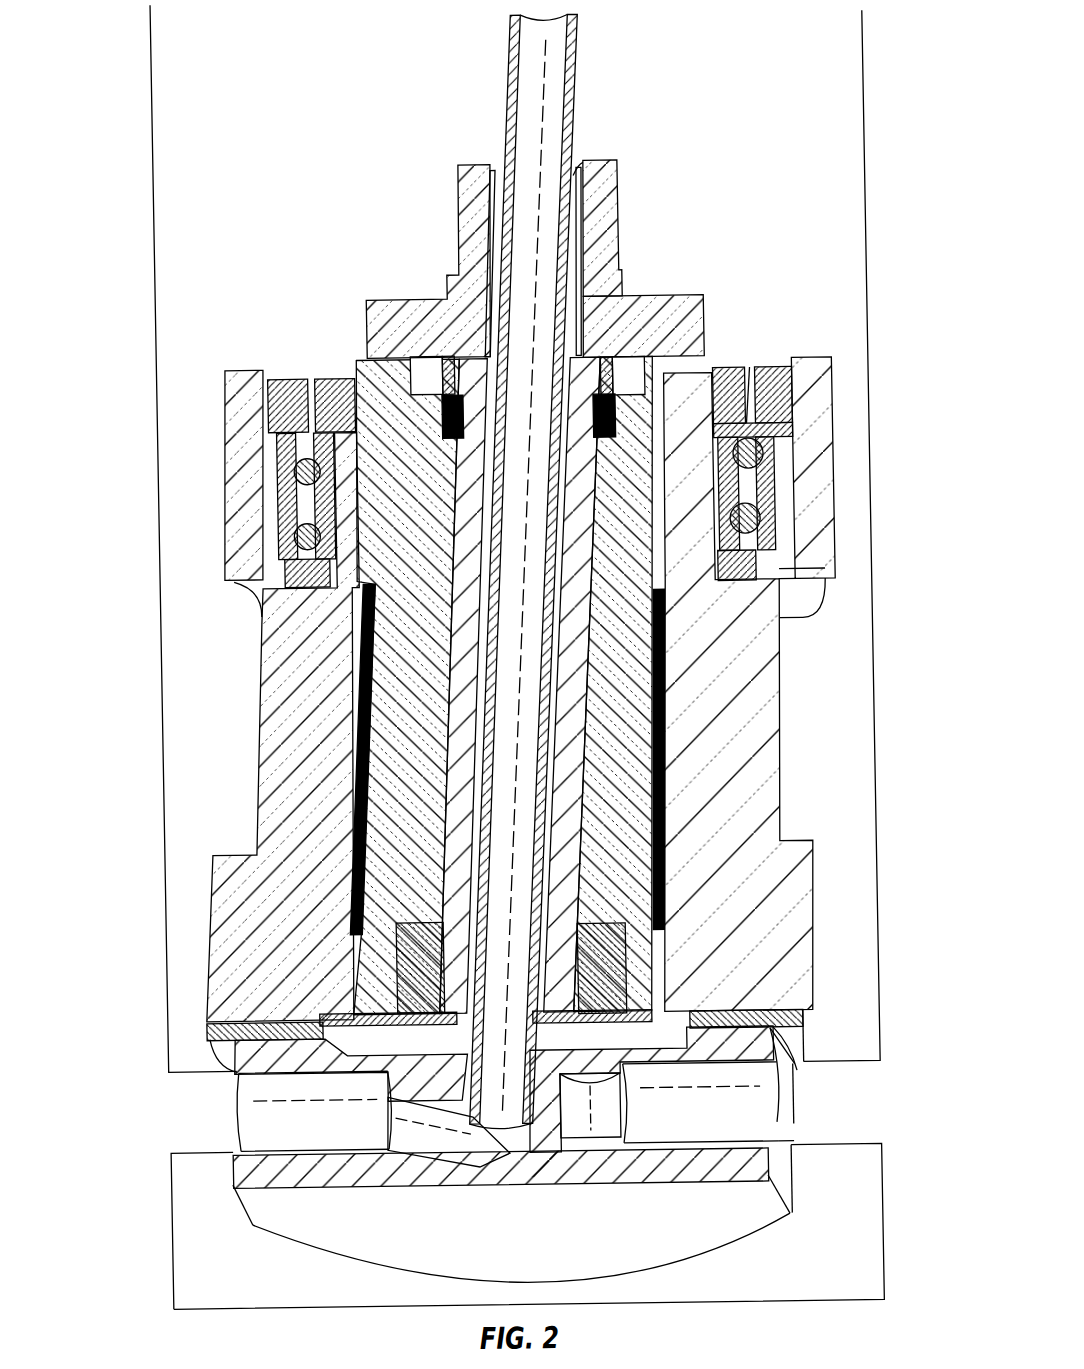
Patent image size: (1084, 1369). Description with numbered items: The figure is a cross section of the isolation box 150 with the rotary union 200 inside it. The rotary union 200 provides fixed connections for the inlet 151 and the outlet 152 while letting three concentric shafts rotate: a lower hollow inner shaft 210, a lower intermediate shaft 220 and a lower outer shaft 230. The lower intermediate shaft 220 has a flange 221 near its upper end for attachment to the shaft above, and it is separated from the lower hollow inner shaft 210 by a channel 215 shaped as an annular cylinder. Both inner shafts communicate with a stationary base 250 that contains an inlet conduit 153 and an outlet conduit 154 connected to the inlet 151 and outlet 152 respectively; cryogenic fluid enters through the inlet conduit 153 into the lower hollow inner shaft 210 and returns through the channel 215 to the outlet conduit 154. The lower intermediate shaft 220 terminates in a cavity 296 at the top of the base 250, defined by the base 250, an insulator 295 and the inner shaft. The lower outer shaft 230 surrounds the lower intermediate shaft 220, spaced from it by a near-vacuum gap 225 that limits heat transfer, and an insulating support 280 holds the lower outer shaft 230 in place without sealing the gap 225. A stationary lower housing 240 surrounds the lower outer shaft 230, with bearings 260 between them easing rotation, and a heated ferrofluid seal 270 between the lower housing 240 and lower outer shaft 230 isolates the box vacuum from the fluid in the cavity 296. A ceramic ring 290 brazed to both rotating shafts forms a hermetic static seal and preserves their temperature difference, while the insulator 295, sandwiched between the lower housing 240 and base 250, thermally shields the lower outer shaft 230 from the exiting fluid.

The isolation box 150 is at (175, 278).
The inlet 151 is at (210, 1118).
The outlet 152 is at (828, 1104).
The inlet conduit 153 is at (294, 1124).
The outlet conduit 154 is at (743, 1103).
The rotary union 200 is at (730, 116).
The lower hollow inner shaft 210 is at (516, 118).
The channel 215 is at (506, 212).
The lower intermediate shaft 220 is at (468, 254).
The flange 221 is at (690, 307).
The gap 225 is at (446, 538).
The lower outer shaft 230 is at (402, 746).
The lower housing 240 is at (760, 703).
The base 250 is at (735, 1233).
The bearings 260 is at (750, 423).
The heated ferrofluid seal 270 is at (662, 827).
The support 280 is at (450, 392).
The ceramic ring 290 is at (405, 973).
The insulator 295 is at (294, 1024).
The cavity 296 is at (747, 1013).